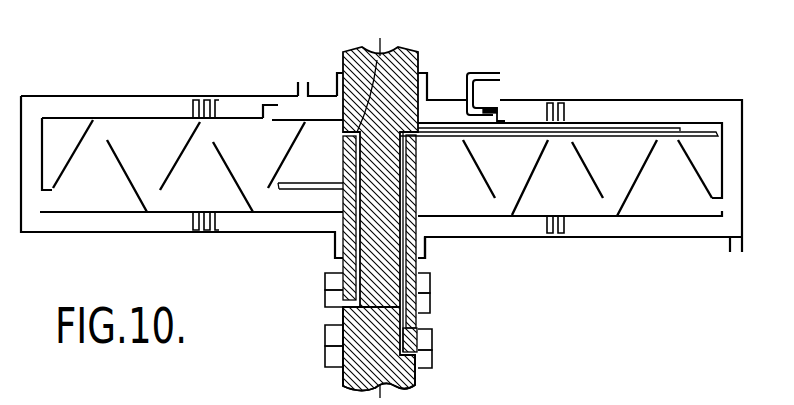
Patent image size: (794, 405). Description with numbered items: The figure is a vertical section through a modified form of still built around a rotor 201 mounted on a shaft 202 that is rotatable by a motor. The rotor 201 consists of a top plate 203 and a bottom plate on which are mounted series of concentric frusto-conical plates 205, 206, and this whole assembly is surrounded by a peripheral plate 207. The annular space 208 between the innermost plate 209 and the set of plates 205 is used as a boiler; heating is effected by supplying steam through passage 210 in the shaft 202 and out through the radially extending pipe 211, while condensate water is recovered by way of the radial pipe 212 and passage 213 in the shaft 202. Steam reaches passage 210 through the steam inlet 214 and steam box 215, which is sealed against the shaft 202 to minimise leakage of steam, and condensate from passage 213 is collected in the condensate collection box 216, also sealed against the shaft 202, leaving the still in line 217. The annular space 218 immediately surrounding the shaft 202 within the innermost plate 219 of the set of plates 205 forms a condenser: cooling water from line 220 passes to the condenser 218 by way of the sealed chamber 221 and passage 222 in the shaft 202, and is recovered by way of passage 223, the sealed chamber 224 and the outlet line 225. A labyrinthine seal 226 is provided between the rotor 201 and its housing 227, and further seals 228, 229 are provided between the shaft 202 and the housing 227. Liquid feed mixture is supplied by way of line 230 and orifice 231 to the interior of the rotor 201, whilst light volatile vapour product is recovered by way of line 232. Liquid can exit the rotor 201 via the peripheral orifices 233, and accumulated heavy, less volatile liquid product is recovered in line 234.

The rotor 201 is at (640, 217).
The shaft 202 is at (401, 48).
The top plate 203 is at (140, 118).
The frusto-conical plates 205 is at (691, 162).
The frusto-conical plates 206 is at (633, 190).
The peripheral plate 207 is at (42, 167).
The annular space 208 is at (58, 133).
The innermost plate 209 is at (684, 200).
The passage 210 is at (413, 318).
The radially extending pipe 211 is at (677, 124).
The radial pipe 212 is at (713, 124).
The passage 213 is at (417, 382).
The steam inlet 214 is at (432, 340).
The steam box 215 is at (325, 333).
The condensate collection box 216 is at (325, 355).
The line 217 is at (432, 358).
The annular space 218 is at (507, 134).
The innermost plate 219 is at (283, 160).
The line 220 is at (325, 282).
The sealed chamber 221 is at (430, 283).
The passage 222 is at (343, 216).
The passage 223 is at (350, 52).
The sealed chamber 224 is at (430, 305).
The outlet line 225 is at (325, 300).
The labyrinthine seal 226 is at (197, 97).
The housing 227 is at (574, 188).
The seal 228 is at (427, 72).
The seal 229 is at (427, 253).
The line 230 is at (495, 72).
The orifice 231 is at (272, 104).
The line 232 is at (301, 82).
The peripheral orifices 233 is at (42, 197).
The line 234 is at (733, 253).